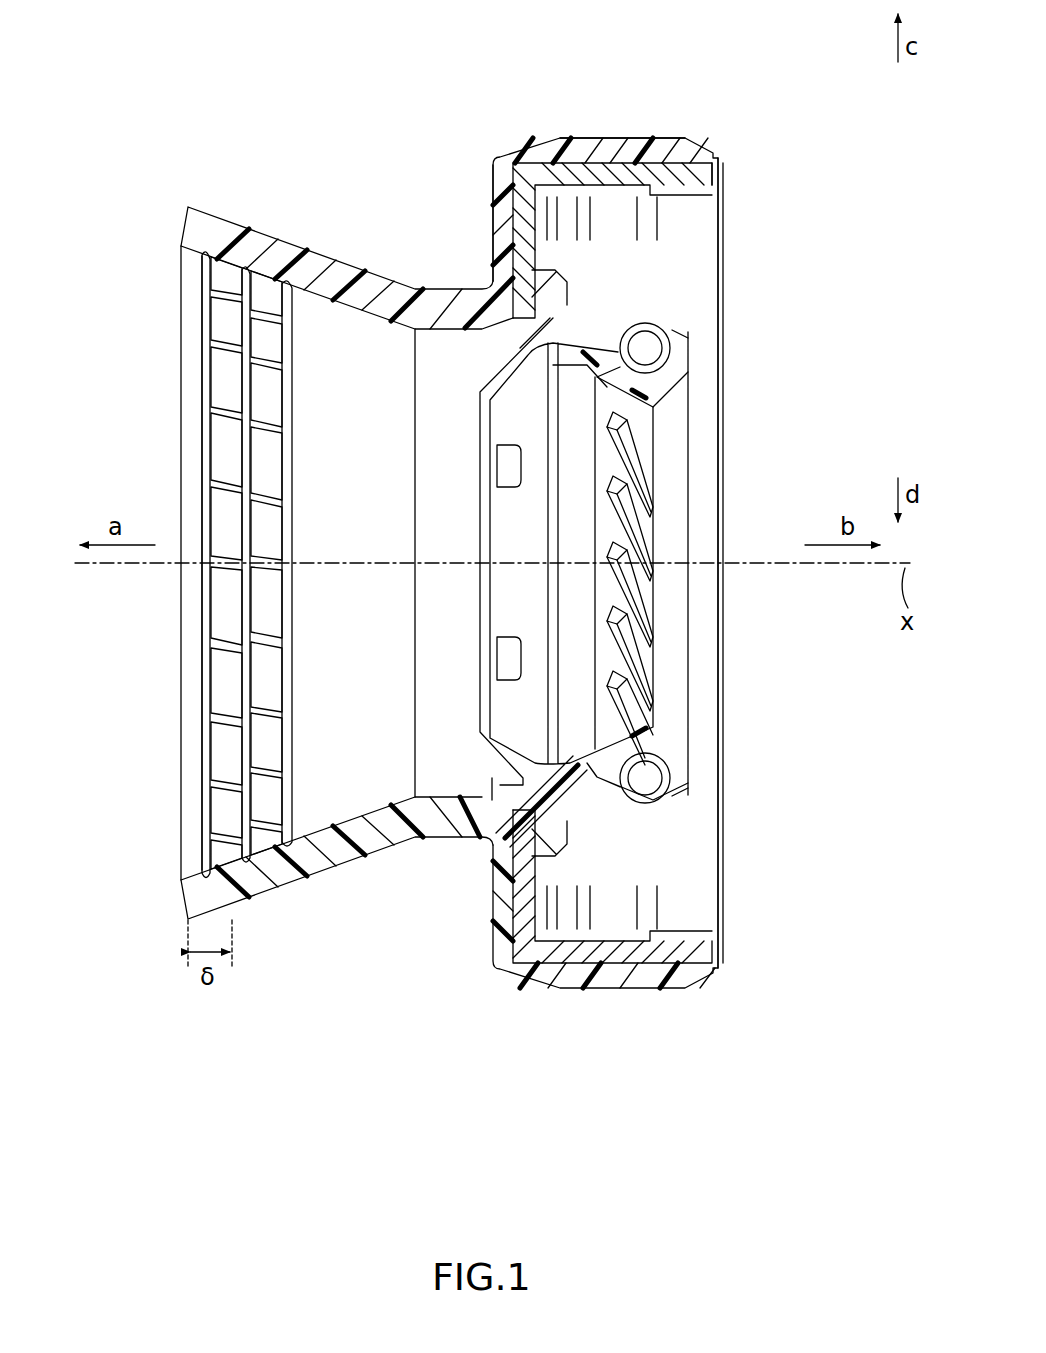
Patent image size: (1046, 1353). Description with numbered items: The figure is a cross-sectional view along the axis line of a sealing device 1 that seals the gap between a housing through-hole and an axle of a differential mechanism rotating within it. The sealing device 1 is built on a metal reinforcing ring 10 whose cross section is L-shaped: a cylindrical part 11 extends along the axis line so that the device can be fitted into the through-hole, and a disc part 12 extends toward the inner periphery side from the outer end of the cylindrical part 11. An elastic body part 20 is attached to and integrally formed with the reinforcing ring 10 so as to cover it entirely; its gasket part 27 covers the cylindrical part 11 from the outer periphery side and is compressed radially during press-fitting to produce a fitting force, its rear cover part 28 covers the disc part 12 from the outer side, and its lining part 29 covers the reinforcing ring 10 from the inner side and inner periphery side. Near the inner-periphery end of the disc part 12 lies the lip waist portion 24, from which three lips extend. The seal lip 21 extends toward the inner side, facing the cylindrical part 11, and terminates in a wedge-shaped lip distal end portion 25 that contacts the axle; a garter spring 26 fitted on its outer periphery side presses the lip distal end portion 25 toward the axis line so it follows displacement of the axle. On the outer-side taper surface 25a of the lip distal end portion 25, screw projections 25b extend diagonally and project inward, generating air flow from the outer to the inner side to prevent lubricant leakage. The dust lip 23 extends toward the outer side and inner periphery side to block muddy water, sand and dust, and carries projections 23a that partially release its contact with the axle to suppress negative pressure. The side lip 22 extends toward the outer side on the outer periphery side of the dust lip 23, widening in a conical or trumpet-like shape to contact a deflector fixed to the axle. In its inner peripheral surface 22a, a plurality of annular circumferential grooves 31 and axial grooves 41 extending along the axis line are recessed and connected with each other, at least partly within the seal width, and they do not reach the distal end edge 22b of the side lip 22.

The sealing device 1 is at (492, 1148).
The reinforcing ring 10 is at (680, 160).
The cylindrical part 11 is at (680, 190).
The disc part 12 is at (527, 247).
The elastic body part 20 is at (468, 160).
The seal lip 21 is at (700, 360).
The side lip 22 is at (272, 200).
The inner peripheral surface 22a is at (190, 500).
The distal end edge 22b is at (182, 678).
The dust lip 23 is at (483, 760).
The projections 23a is at (495, 660).
The lip waist portion 24 is at (567, 327).
The lip distal end portion 25 is at (670, 400).
The taper surface 25a is at (627, 593).
The screw projections 25b is at (645, 670).
The garter spring 26 is at (663, 317).
The gasket part 27 is at (650, 138).
The rear cover part 28 is at (500, 243).
The lining part 29 is at (612, 222).
The circumferential groove 31 is at (207, 253).
The axial groove 41 is at (270, 325).